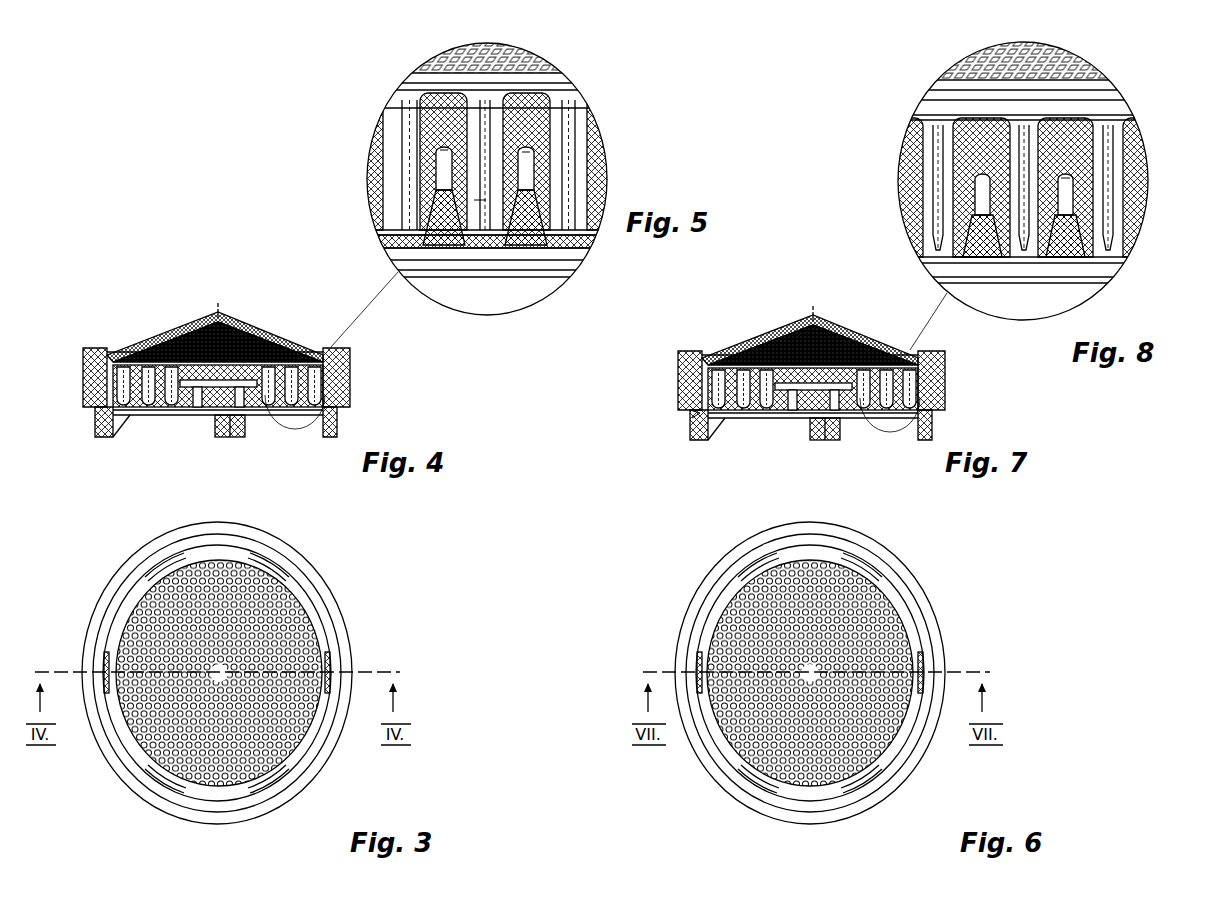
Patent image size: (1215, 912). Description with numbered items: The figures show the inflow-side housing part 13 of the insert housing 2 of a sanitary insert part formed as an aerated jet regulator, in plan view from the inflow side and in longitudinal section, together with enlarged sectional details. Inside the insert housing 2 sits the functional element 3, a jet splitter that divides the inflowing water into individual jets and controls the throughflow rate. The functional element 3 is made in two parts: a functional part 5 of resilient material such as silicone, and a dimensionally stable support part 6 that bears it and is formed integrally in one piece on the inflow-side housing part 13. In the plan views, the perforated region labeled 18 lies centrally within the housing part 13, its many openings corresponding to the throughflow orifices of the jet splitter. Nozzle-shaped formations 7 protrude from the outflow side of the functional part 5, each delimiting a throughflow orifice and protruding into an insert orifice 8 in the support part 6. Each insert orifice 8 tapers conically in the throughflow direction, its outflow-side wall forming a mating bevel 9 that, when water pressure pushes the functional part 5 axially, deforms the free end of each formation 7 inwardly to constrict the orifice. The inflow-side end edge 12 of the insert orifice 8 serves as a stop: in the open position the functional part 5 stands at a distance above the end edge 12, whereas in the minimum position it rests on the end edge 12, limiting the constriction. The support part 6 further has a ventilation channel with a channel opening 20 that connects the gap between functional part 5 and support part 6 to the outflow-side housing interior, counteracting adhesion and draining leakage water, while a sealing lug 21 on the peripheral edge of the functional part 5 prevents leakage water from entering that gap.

In FIG. 4, the insert housing 2 is at (345, 380).
In FIG. 7, the insert housing 2 is at (675, 386).
In FIG. 4, the functional element 3 is at (336, 401).
In FIG. 7, the functional element 3 is at (952, 380).
In FIG. 5, the functional element 3 is at (610, 163).
In FIG. 8, the functional element 3 is at (852, 168).
In FIG. 4, the functional part 5 is at (196, 372).
In FIG. 7, the functional part 5 is at (840, 370).
In FIG. 5, the functional part 5 is at (535, 115).
In FIG. 8, the functional part 5 is at (900, 153).
In FIG. 4, the support part 6 is at (262, 372).
In FIG. 7, the support part 6 is at (850, 365).
In FIG. 5, the support part 6 is at (545, 255).
In FIG. 8, the support part 6 is at (968, 245).
In FIG. 4, the nozzle-shaped formations 7 is at (199, 398).
In FIG. 7, the nozzle-shaped formations 7 is at (841, 410).
In FIG. 5, the nozzle-shaped formations 7 is at (455, 205).
In FIG. 8, the nozzle-shaped formations 7 is at (955, 172).
In FIG. 5, the insert orifice 8 is at (456, 148).
In FIG. 5, the mating bevel 9 is at (479, 208).
In FIG. 5, the inflow-side end edge 12 is at (529, 157).
In FIG. 8, the inflow-side end edge 12 is at (1061, 173).
In FIG. 3, the inflow-side housing part 13 is at (343, 635).
In FIG. 6, the inflow-side housing part 13 is at (920, 602).
In FIG. 3, the perforated plate 18 is at (290, 597).
In FIG. 6, the perforated plate 18 is at (790, 580).
In FIG. 4, the perforated plate 18 is at (301, 332).
In FIG. 7, the perforated plate 18 is at (770, 323).
In FIG. 4, the channel opening 20 is at (216, 425).
In FIG. 7, the channel opening 20 is at (798, 404).
In FIG. 7, the sealing lug 21 is at (698, 412).